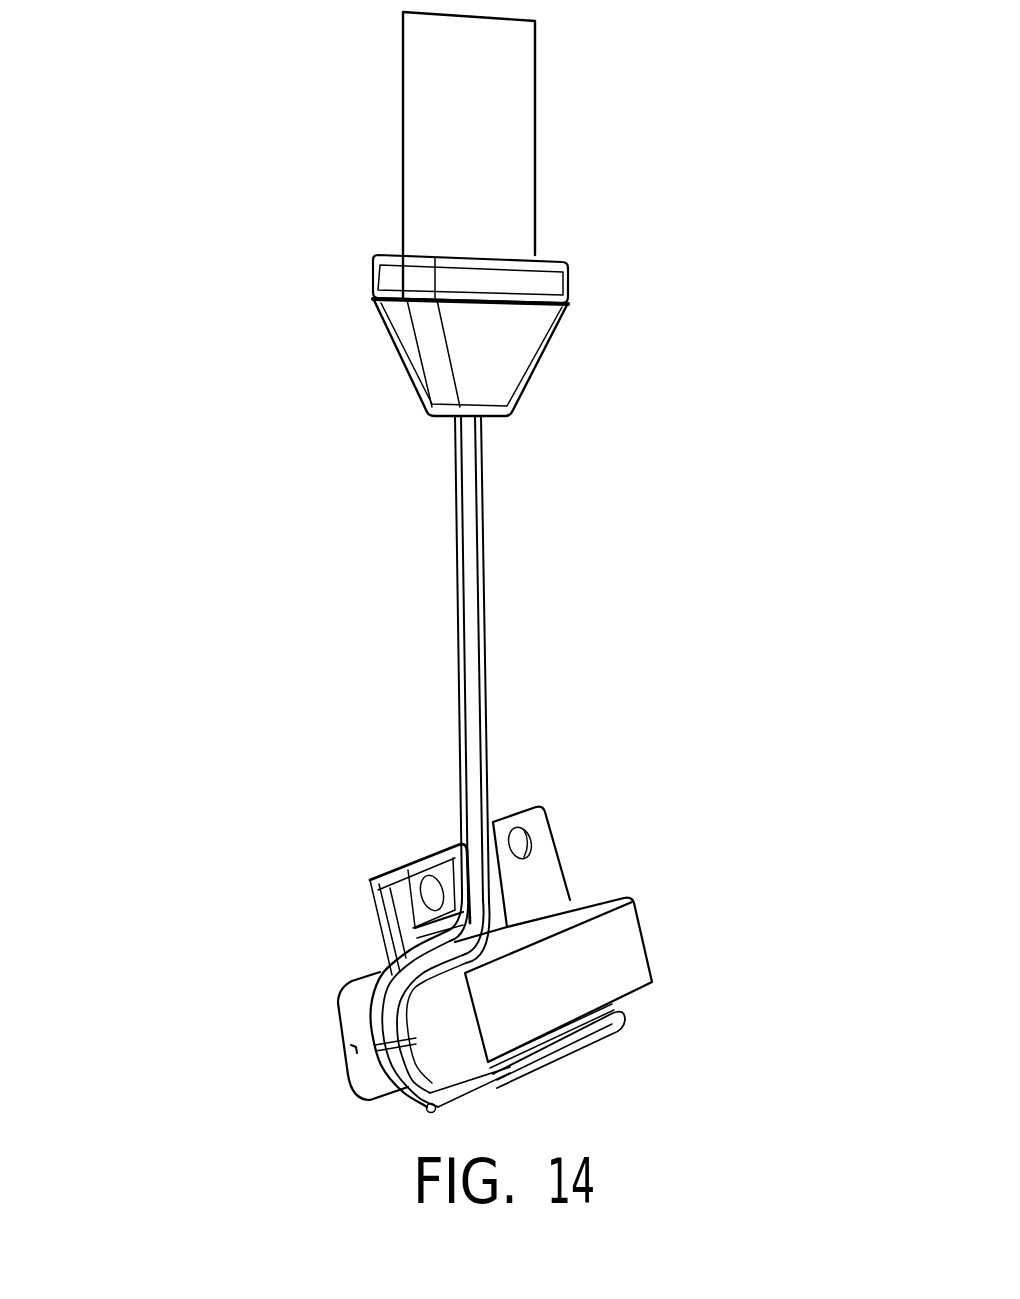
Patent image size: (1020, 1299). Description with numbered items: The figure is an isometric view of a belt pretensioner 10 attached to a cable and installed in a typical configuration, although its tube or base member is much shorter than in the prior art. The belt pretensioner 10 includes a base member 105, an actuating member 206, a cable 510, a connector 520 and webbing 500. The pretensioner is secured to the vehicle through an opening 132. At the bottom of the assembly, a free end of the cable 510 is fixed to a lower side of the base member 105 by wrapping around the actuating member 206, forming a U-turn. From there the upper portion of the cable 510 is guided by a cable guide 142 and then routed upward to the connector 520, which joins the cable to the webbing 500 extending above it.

The belt pretensioner 10 is at (197, 808).
The base member 105 is at (600, 963).
The opening 132 is at (518, 845).
The cable guide 142 is at (430, 855).
The actuating member 206 is at (428, 1010).
The webbing 500 is at (485, 158).
The cable 510 is at (467, 580).
The connector 520 is at (512, 352).